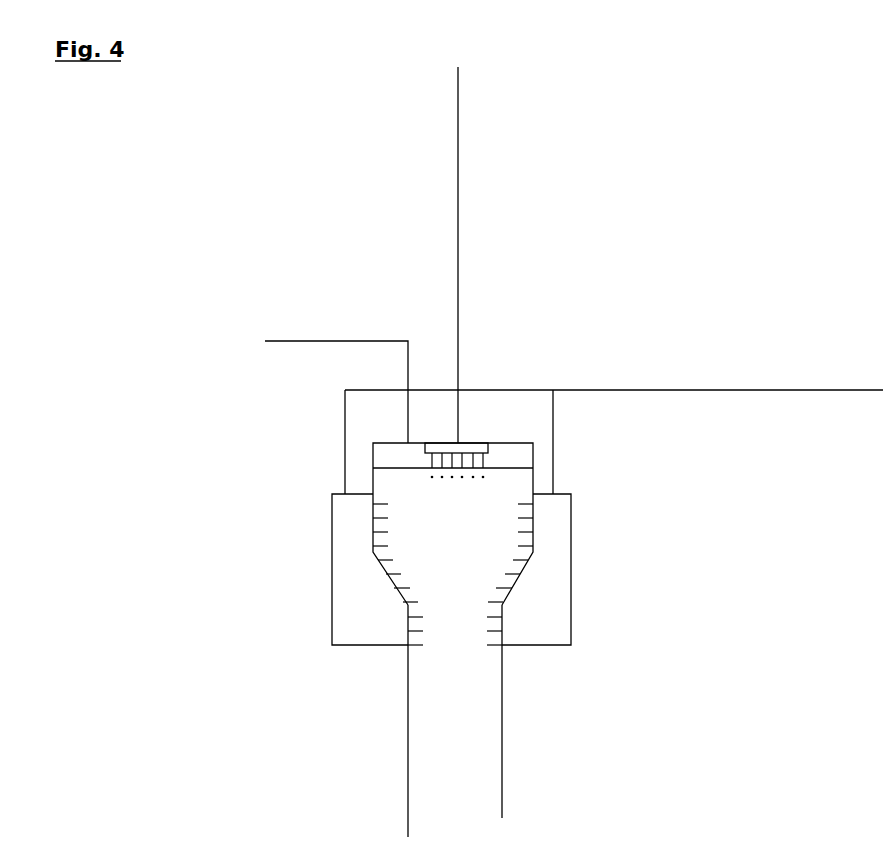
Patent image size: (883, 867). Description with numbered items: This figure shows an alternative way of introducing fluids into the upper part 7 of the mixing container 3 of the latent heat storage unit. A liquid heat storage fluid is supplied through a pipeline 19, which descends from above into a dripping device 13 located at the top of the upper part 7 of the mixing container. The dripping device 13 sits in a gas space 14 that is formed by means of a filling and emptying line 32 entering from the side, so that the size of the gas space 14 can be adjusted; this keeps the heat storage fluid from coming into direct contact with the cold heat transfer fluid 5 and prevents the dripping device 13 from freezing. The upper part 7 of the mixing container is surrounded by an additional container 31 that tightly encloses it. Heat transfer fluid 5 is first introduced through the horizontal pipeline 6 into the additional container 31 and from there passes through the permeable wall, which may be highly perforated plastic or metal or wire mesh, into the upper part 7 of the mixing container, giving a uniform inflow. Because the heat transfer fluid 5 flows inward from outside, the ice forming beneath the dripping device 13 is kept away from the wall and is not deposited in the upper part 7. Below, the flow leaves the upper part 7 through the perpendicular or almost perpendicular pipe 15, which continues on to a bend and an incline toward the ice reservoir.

The pipeline 19 is at (476, 242).
The pipeline 6 is at (747, 389).
The filling and emptying line 32 is at (336, 381).
The upper part of the mixing container 7 is at (534, 458).
The dripping device 13 is at (460, 445).
The gas space 14 is at (502, 450).
The mixing container 3 is at (403, 718).
The pipe 15 is at (508, 743).
The heat transfer fluid 5 is at (352, 580).
The additional container 31 is at (571, 608).